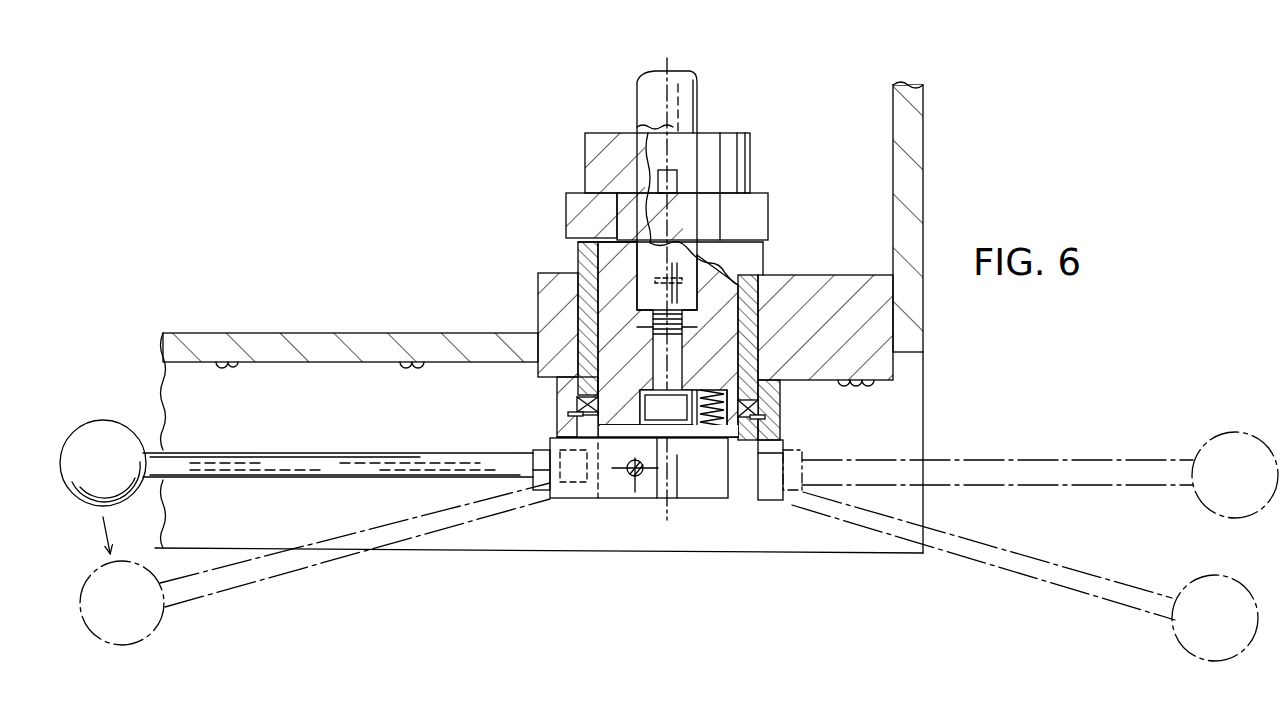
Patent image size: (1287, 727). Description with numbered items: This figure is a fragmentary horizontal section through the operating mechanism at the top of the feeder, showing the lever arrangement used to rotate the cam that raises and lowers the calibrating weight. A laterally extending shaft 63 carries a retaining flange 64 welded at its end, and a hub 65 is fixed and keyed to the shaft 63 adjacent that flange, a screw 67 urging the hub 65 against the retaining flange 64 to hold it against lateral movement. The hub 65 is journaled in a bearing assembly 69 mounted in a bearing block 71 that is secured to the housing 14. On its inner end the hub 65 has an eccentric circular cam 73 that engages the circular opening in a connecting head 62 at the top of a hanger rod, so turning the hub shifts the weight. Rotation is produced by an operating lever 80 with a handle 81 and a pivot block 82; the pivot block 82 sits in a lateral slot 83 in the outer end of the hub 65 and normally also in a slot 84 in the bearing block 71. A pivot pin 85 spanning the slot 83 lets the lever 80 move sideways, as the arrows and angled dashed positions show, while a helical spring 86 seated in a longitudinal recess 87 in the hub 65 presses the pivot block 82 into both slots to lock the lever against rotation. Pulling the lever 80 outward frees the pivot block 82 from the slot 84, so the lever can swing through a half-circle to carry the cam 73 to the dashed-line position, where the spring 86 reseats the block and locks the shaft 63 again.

The housing 14 is at (913, 195).
The connecting head 62 is at (762, 222).
The shaft 63 is at (686, 95).
The retaining flange 64 is at (730, 145).
The hub 65 is at (607, 270).
The screw 67 is at (672, 412).
The bearing assembly 69 is at (598, 292).
The bearing block 71 is at (753, 305).
The eccentric circular cam 73 is at (615, 213).
The operating lever 80 is at (322, 532).
The handle 81 is at (108, 430).
The pivot block 82 is at (585, 498).
The lateral slot 83 is at (617, 428).
The slot 84 is at (548, 448).
The pivot pin 85 is at (640, 478).
The helical spring 86 is at (735, 432).
The recess 87 is at (713, 392).